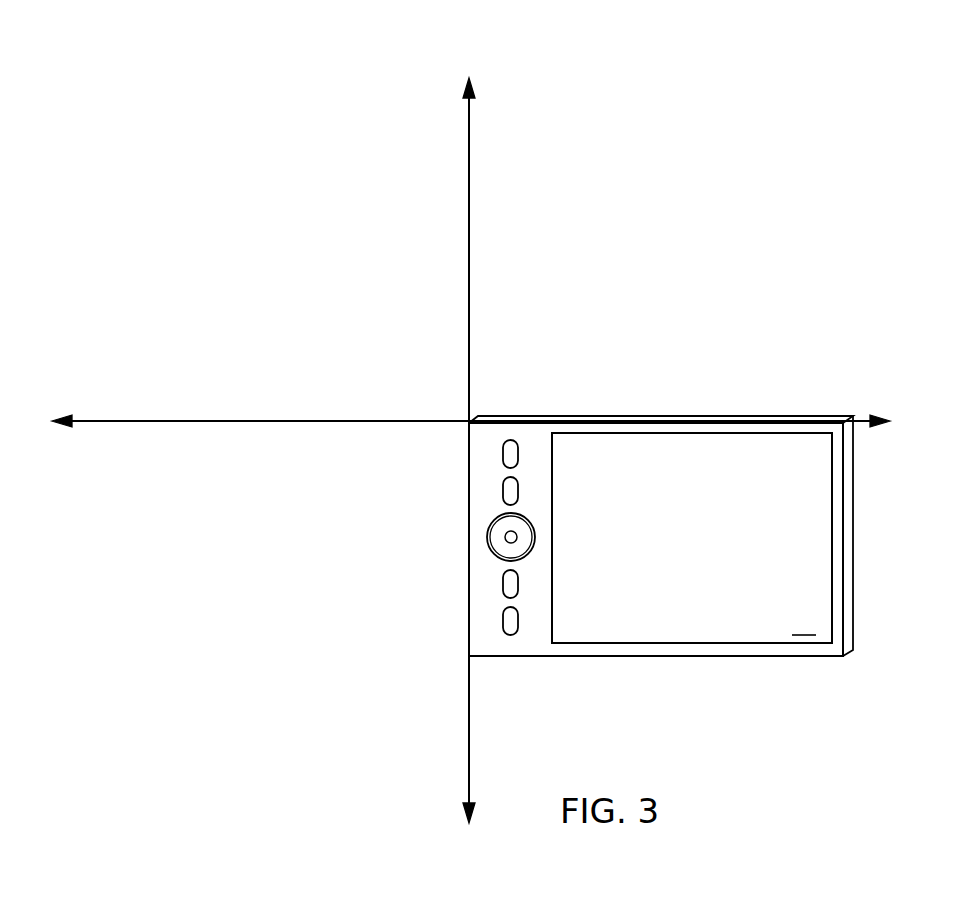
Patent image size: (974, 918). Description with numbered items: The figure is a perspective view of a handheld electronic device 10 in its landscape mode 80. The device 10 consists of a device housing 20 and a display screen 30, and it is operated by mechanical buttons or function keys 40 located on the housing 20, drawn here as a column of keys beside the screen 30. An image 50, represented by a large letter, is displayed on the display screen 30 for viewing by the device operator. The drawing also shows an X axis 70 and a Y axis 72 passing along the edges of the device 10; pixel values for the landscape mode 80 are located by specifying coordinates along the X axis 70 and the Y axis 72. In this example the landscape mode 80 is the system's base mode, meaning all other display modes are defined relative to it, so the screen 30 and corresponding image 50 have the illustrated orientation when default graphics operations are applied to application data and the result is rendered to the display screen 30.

The handheld electronic device 10 is at (691, 462).
The device housing 20 is at (852, 612).
The display screen 30 is at (720, 447).
The function keys 40 is at (507, 455).
The image 50 is at (698, 530).
The X axis 70 is at (868, 419).
The Y axis 72 is at (469, 139).
The landscape mode 80 is at (806, 623).